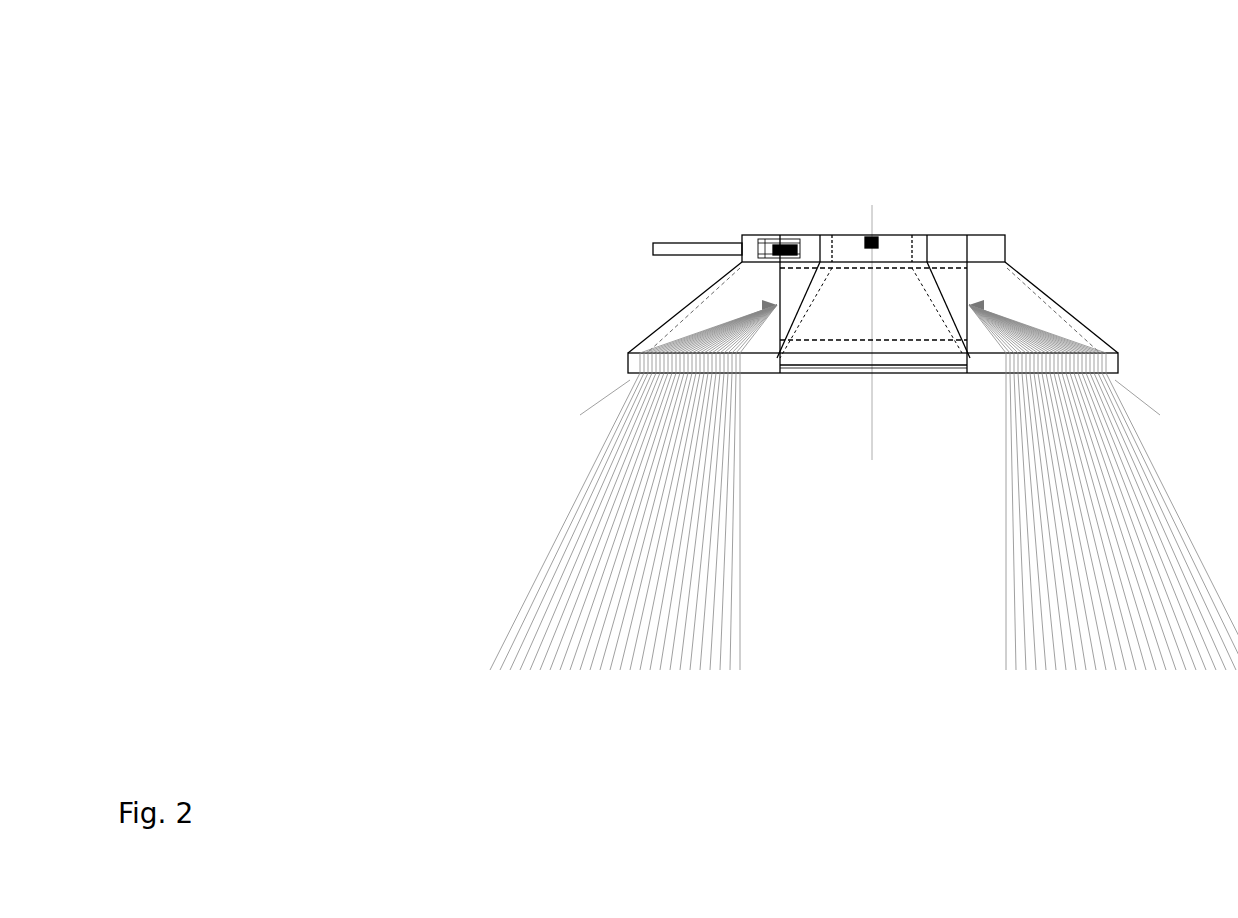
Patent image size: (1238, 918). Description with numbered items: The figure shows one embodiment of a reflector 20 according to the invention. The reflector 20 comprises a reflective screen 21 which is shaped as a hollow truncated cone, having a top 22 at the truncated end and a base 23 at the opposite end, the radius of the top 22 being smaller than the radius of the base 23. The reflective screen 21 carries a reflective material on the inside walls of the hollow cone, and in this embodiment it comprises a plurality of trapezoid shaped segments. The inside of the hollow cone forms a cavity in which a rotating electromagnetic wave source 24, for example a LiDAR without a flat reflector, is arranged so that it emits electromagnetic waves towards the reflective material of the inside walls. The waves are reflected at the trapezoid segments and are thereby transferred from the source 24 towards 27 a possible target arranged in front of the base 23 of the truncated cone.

The reflector 20 is at (1107, 185).
The reflective screen 21 is at (667, 310).
The top 22 is at (739, 261).
The base 23 is at (628, 373).
The rotating electromagnetic wave source 24 is at (912, 312).
The transferred waves towards target 27 is at (502, 672).